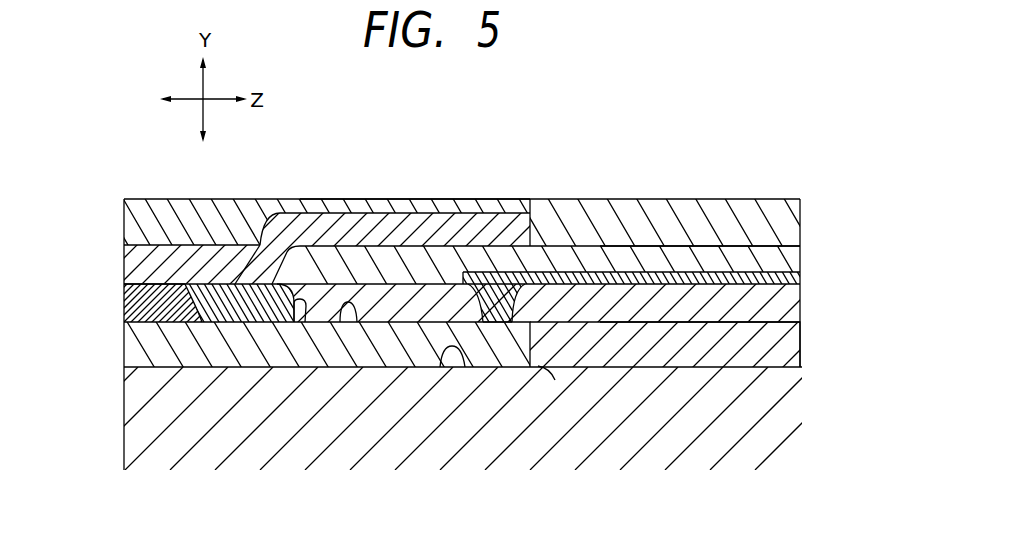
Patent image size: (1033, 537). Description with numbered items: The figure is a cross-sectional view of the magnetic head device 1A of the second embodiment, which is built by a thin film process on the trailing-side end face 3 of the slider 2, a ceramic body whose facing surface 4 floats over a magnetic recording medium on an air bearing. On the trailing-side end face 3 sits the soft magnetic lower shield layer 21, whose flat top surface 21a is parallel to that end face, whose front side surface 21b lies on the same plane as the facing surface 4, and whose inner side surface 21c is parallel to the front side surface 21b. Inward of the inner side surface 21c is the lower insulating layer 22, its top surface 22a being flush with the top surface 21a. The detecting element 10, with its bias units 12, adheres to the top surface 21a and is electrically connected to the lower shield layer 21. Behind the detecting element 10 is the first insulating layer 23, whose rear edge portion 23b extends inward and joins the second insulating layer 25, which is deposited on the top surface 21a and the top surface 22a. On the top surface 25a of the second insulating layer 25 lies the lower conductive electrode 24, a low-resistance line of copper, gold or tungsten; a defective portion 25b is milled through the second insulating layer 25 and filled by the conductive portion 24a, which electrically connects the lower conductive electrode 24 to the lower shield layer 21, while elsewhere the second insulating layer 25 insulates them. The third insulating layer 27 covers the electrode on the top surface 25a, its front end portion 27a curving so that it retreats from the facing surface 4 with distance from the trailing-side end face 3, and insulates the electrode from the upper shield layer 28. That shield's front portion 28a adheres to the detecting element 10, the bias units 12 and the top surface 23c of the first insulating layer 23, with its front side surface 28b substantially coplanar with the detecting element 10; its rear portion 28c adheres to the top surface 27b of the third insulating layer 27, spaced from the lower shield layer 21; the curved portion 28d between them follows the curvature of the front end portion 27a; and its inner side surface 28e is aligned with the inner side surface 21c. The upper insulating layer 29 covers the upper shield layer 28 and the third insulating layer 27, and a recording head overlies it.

The magnetic head device 1A is at (587, 157).
The slider 2 is at (770, 445).
The trailing-side end face 3 is at (465, 367).
The facing surface 4 is at (124, 433).
The detecting element 10 is at (122, 304).
The bias unit 12 is at (140, 308).
The lower shield layer 21 is at (289, 336).
The top surface 21a is at (357, 322).
The front side surface 21b is at (124, 339).
The inner side surface 21c is at (555, 380).
The lower insulating layer 22 is at (786, 343).
The top surface 22a is at (716, 322).
The first insulating layer 23 is at (240, 305).
The rear edge portion 23b is at (305, 322).
The top surface 23c is at (232, 287).
The lower conductive electrode 24 is at (792, 275).
The conductive portion 24a is at (493, 308).
The second insulating layer 25 is at (688, 298).
The top surface 25a is at (353, 275).
The defective portion 25b is at (496, 312).
The third insulating layer 27 is at (720, 268).
The front end portion 27a is at (305, 243).
The top surface 27b is at (690, 248).
The upper shield layer 28 is at (197, 262).
The front portion 28a is at (148, 253).
The front side surface 28b is at (124, 273).
The rear portion 28c is at (421, 228).
The curved portion 28d is at (264, 215).
The inner side surface 28e is at (536, 228).
The upper insulating layer 29 is at (630, 207).